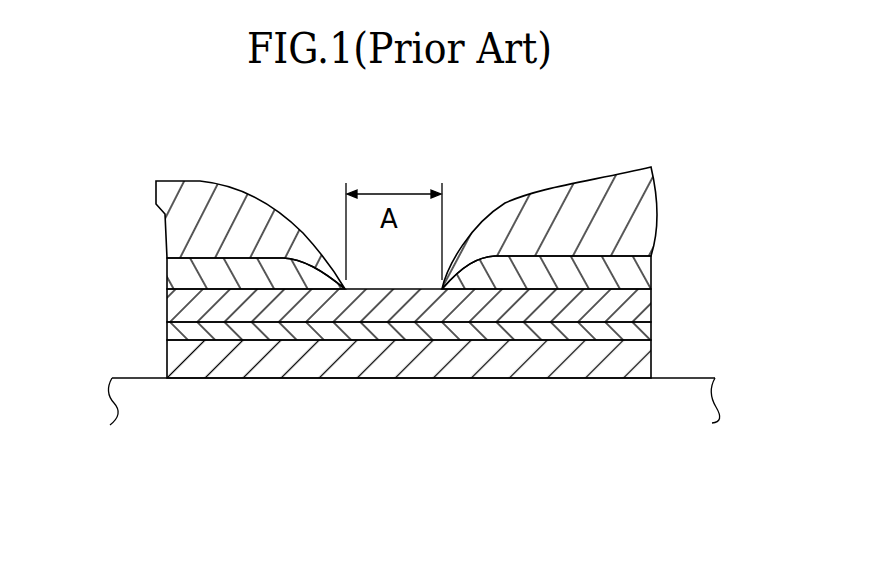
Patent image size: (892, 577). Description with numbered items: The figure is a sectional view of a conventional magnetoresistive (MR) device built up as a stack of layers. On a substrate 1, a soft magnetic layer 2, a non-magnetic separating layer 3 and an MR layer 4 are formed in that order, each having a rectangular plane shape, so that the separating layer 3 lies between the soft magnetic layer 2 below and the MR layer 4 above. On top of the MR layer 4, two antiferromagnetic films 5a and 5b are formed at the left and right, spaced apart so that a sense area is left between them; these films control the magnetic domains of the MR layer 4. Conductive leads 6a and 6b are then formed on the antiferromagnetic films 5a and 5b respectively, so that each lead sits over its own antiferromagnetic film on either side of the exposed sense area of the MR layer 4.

The substrate 1 is at (687, 415).
The soft magnetic layer 2 is at (633, 362).
The non-magnetic separating layer 3 is at (633, 333).
The MR layer 4 is at (632, 310).
The antiferromagnetic film 5a is at (168, 280).
The antiferromagnetic film 5b is at (636, 270).
The conductive lead 6a is at (178, 213).
The conductive lead 6b is at (640, 226).